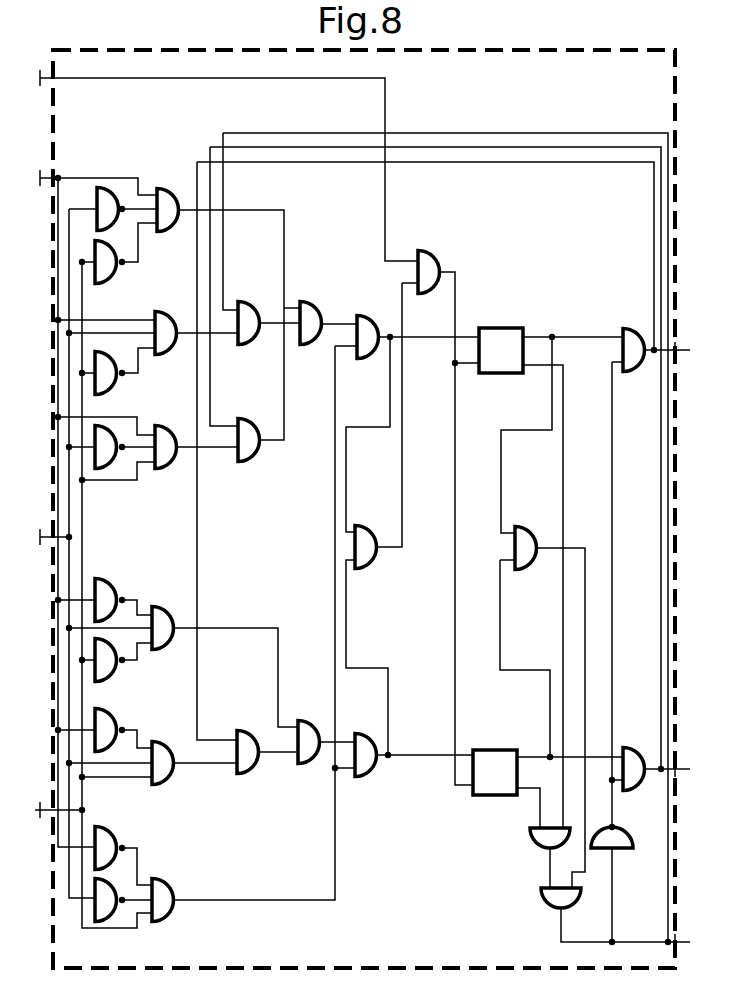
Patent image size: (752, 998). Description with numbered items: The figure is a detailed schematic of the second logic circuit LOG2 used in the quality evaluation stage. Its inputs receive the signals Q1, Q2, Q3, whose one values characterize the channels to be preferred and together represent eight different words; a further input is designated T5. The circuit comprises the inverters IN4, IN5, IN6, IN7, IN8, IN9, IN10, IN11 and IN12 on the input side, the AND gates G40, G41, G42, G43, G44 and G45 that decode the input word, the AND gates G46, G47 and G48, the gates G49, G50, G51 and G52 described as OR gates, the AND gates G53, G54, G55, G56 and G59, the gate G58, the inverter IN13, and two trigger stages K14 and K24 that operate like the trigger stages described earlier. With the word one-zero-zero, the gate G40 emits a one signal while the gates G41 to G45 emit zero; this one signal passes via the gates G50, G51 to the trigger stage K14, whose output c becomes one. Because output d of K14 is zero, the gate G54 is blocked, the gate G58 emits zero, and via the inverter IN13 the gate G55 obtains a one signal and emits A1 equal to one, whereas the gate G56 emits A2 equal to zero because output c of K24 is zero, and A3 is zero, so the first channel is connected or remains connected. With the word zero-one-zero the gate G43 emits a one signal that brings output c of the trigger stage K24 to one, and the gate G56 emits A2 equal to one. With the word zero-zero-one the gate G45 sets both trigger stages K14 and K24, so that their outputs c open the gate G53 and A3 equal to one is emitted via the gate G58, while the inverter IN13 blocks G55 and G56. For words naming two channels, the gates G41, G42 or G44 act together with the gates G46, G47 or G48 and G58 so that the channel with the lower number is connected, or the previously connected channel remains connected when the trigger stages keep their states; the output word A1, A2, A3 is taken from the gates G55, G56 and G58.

The second logic circuit LOG2 is at (566, 42).
The clock input T5 is at (40, 70).
The signal Q1 is at (40, 170).
The signal Q2 is at (40, 529).
The signal Q3 is at (40, 800).
The signal A1 is at (686, 341).
The signal A2 is at (686, 760).
The signal A3 is at (686, 934).
The inverter IN4 is at (100, 197).
The inverter IN5 is at (113, 278).
The inverter IN6 is at (113, 389).
The inverter IN7 is at (106, 468).
The inverter IN8 is at (106, 580).
The inverter IN9 is at (113, 675).
The inverter IN10 is at (108, 716).
The inverter IN11 is at (108, 828).
The inverter IN12 is at (108, 922).
The inverter IN13 is at (630, 846).
The AND gate G40 is at (175, 186).
The AND gate G41 is at (173, 312).
The AND gate G42 is at (173, 425).
The AND gate G43 is at (170, 606).
The AND gate G44 is at (170, 742).
The AND gate G45 is at (168, 885).
The AND gate G46 is at (256, 300).
The AND gate G47 is at (256, 419).
The AND gate G48 is at (254, 731).
The OR gate G49 is at (316, 720).
The gate G50 is at (318, 300).
The OR gate G51 is at (375, 314).
The OR gate G52 is at (373, 732).
The AND gate G53 is at (533, 525).
The AND gate G54 is at (535, 840).
The AND gate G55 is at (641, 326).
The AND gate G56 is at (641, 744).
The gate G58 is at (373, 525).
The AND gate G59 is at (434, 252).
The trigger stage K14 is at (500, 353).
The trigger stage K24 is at (495, 775).